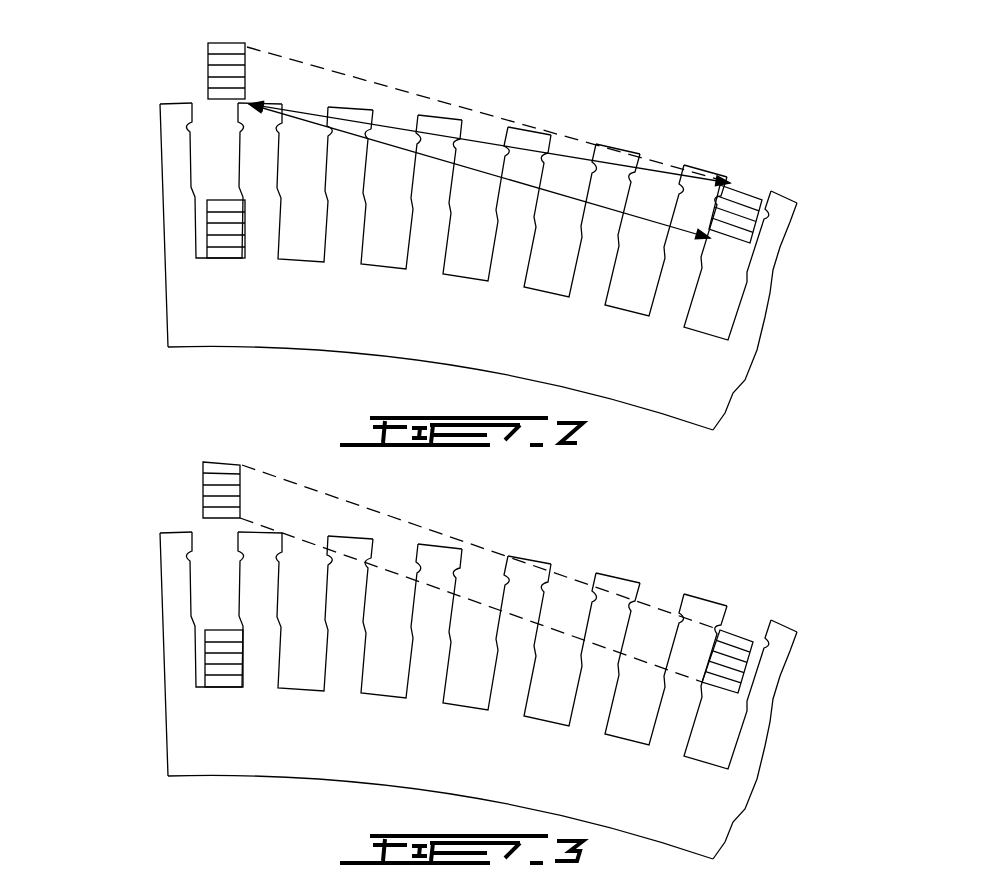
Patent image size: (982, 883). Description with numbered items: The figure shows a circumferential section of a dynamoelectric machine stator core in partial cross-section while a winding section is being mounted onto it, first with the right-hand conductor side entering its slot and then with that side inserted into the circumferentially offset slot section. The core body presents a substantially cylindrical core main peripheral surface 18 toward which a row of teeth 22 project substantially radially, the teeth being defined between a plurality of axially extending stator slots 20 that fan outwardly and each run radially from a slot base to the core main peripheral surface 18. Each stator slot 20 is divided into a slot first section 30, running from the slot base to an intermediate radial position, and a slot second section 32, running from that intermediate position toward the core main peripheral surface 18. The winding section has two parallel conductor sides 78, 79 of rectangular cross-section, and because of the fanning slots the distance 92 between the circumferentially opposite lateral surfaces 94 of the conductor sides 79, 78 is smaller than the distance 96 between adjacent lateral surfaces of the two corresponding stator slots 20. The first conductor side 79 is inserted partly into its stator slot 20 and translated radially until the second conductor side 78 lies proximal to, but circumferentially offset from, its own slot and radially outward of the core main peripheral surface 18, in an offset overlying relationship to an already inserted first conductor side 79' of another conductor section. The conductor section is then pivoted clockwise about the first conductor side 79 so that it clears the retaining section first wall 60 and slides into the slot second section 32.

In FIG. 2, the core main peripheral surface 18 is at (173, 102).
In FIG. 2, the stator slot 20 is at (300, 242).
In FIG. 2, the tooth 22 is at (427, 258).
In FIG. 2, the slot first section 30 is at (710, 317).
In FIG. 2, the slot second section 32 is at (210, 152).
In FIG. 3, the retaining section first wall 60 is at (730, 620).
In FIG. 2, the second conductor side 78 is at (220, 70).
In FIG. 3, the second conductor side 78 is at (217, 488).
In FIG. 2, the first conductor side 79 is at (764, 180).
In FIG. 3, the first conductor side 79 is at (548, 579).
In FIG. 2, the already inserted first conductor side 79' is at (170, 229).
In FIG. 3, the already inserted first conductor side 79' is at (165, 658).
In FIG. 2, the distance between circumferentially opposite lateral surfaces of the conductor si 92 is at (565, 195).
In FIG. 2, the lateral surface 94 is at (252, 47).
In FIG. 2, the distance between circumferentially adjacent lateral surfaces of two stator slots 96 is at (403, 128).